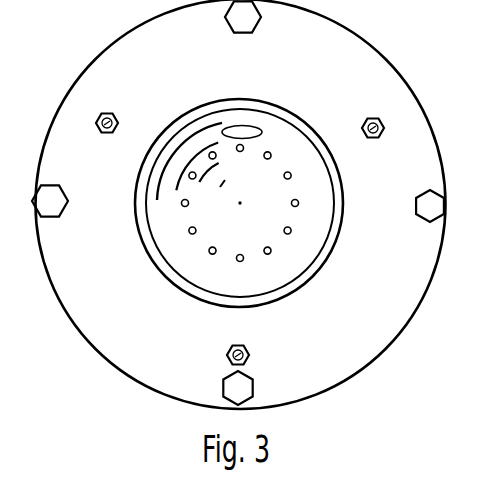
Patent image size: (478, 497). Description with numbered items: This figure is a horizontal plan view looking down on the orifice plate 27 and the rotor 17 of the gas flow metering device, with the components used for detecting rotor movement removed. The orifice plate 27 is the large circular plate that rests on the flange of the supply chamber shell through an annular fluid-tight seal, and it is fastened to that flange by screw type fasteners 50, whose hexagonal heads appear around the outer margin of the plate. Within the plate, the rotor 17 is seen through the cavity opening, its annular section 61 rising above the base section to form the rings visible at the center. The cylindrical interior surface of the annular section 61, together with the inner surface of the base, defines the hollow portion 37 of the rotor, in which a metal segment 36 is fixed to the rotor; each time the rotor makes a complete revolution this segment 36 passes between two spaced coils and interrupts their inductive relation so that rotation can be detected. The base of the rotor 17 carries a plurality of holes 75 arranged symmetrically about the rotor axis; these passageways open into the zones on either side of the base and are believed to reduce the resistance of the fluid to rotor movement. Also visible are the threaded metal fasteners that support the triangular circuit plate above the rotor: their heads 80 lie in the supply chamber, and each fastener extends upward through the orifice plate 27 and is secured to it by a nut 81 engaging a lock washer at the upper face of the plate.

The orifice plate 27 is at (410, 80).
The rotor 17 is at (346, 235).
The annular section 61 is at (323, 267).
The hollow portion 37 is at (283, 283).
The metal segment 36 is at (244, 126).
The holes 75 is at (267, 250).
The screw type fasteners 50 is at (266, 374).
The heads 80 is at (123, 113).
The nut 81 is at (258, 342).